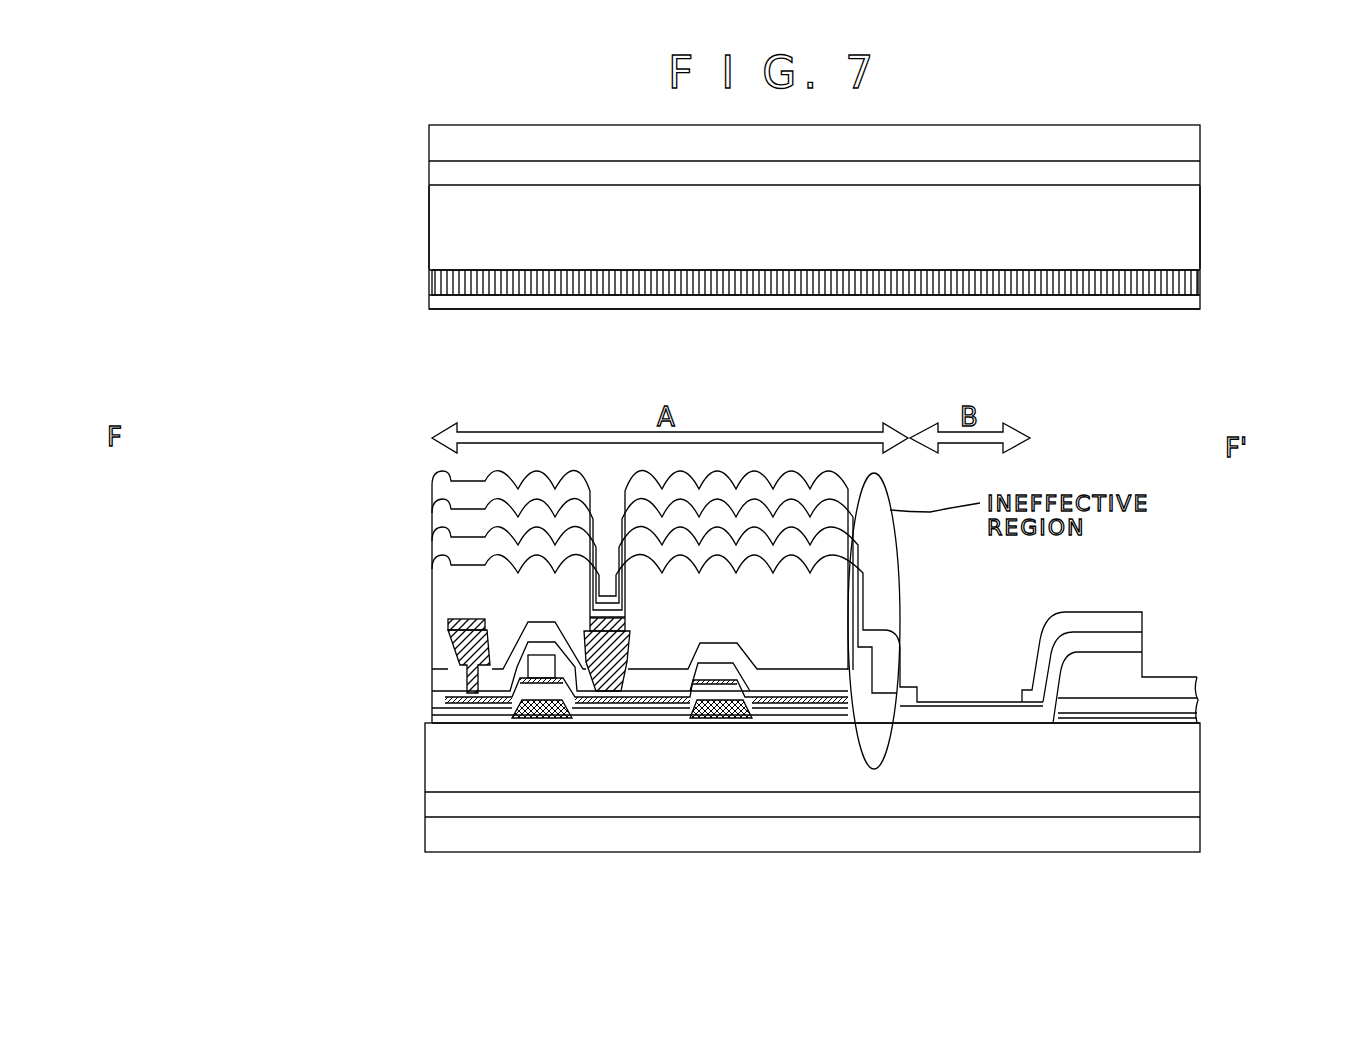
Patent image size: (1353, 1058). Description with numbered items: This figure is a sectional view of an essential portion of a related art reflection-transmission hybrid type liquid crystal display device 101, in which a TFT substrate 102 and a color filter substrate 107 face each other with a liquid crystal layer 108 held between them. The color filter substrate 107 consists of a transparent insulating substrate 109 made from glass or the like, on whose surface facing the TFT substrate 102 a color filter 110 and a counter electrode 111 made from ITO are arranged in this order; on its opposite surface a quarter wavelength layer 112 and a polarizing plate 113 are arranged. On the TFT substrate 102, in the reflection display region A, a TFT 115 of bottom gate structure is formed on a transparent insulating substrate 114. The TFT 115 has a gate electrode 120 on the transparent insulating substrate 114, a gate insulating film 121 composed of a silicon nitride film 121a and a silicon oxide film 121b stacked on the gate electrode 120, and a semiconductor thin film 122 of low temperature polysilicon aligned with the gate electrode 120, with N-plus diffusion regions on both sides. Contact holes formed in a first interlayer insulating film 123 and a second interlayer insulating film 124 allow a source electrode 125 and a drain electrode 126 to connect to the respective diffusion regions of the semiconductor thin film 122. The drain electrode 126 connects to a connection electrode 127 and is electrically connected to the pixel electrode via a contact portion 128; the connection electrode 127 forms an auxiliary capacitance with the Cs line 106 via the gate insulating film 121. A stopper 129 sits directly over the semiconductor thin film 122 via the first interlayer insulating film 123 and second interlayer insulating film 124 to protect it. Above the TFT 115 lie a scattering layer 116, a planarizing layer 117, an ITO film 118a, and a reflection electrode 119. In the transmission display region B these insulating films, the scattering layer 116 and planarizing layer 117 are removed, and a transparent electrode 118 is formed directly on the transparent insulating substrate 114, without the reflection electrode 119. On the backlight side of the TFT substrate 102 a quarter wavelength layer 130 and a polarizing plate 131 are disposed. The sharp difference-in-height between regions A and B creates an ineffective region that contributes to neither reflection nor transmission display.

The liquid crystal display device 101 is at (1300, 106).
The TFT substrate 102 is at (194, 468).
The Cs line 106 is at (712, 722).
The color filter substrate 107 is at (256, 228).
The liquid crystal layer 108 is at (425, 315).
The transparent insulating substrate 109 is at (448, 233).
The color filter 110 is at (429, 281).
The counter electrode 111 is at (445, 300).
The quarter wavelength layer 112 is at (429, 177).
The polarizing plate 113 is at (429, 143).
The transparent insulating substrate 114 is at (425, 779).
The TFT 115 is at (520, 720).
The scattering layer 116 is at (432, 590).
The planarizing layer 117 is at (432, 548).
The transparent electrode 118 is at (968, 712).
The ITO film 118a is at (432, 527).
The reflection electrode 119 is at (432, 495).
The gate electrode 120 is at (520, 722).
The gate insulating film 121 is at (257, 673).
The silicon nitride film 121a is at (433, 717).
The silicon oxide film 121b is at (437, 702).
The semiconductor thin film 122 is at (625, 722).
The first interlayer insulating film 123 is at (432, 691).
The second interlayer insulating film 124 is at (432, 668).
The source electrode 125 is at (448, 625).
The drain electrode 126 is at (630, 640).
The connection electrode 127 is at (625, 623).
The contact portion 128 is at (607, 590).
The stopper 129 is at (543, 668).
The quarter wavelength layer 130 is at (425, 810).
The polarizing plate 131 is at (425, 843).